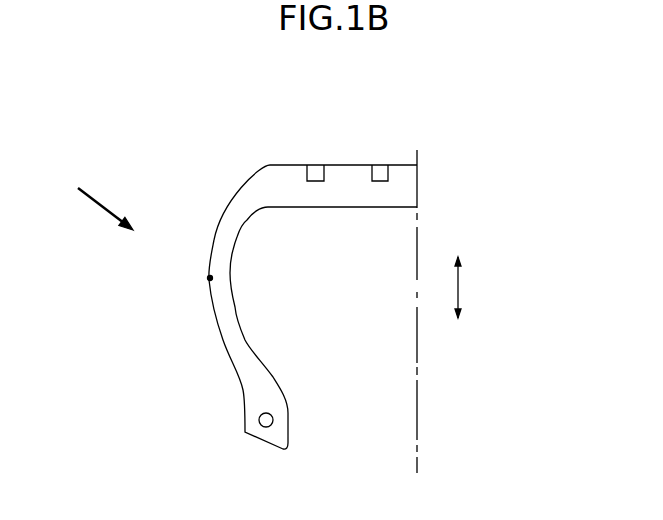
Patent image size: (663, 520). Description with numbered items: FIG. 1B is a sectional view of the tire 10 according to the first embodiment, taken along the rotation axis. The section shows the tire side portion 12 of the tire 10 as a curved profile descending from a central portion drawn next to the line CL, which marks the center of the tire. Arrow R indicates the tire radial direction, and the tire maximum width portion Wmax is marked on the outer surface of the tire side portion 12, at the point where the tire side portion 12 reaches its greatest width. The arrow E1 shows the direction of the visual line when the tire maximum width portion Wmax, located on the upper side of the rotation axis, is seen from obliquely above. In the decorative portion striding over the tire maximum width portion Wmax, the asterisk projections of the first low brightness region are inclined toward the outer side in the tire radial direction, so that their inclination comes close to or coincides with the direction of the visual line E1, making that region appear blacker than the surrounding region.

The tire 10 is at (355, 138).
The tire side portion 12 is at (217, 231).
The center line CL is at (417, 162).
The tire radial direction R is at (458, 282).
The visual line E1 is at (108, 207).
The tire maximum width portion Wmax is at (210, 278).